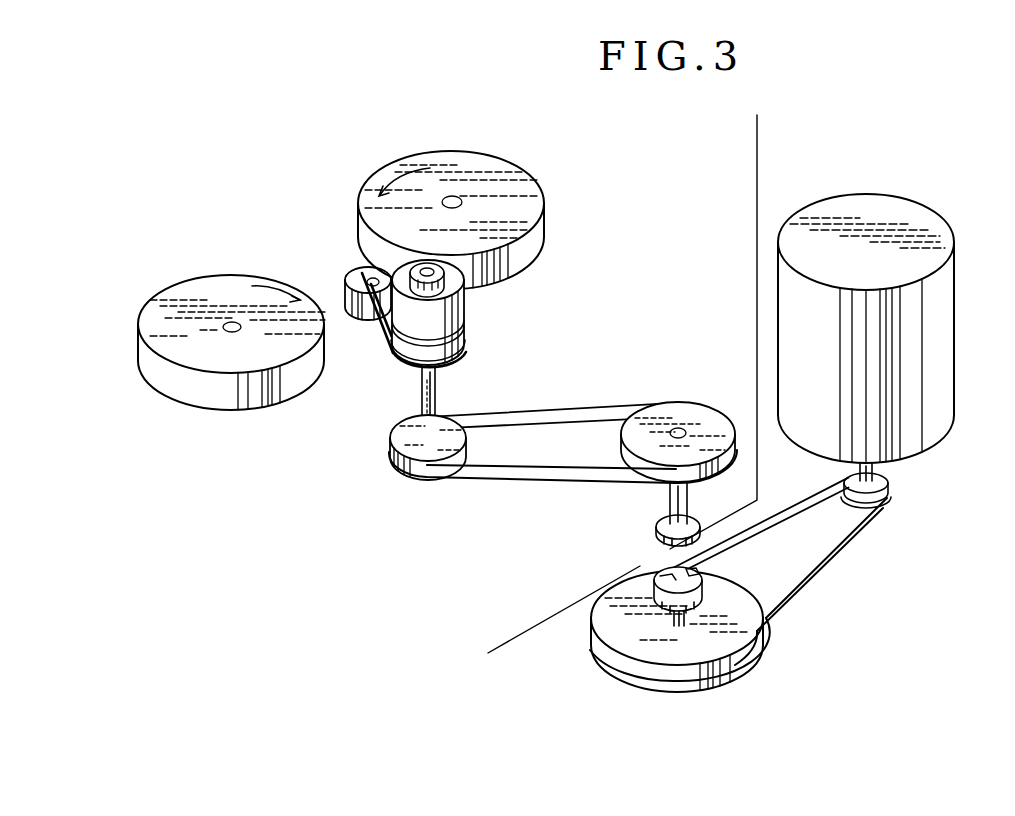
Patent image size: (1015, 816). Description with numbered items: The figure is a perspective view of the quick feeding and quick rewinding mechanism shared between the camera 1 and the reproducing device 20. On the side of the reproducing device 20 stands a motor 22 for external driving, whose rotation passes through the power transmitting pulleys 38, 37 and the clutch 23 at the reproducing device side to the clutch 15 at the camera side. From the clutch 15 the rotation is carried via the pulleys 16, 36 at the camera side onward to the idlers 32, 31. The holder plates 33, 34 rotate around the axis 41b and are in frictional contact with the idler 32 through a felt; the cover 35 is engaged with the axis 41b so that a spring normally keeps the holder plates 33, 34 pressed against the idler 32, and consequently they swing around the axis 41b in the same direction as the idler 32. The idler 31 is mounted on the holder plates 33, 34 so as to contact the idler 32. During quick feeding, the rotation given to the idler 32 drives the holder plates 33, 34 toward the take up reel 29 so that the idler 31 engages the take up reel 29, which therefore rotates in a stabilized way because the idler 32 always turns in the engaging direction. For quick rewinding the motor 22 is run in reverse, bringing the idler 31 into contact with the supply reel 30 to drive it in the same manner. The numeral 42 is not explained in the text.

The camera 1 is at (729, 176).
The reproducing device 20 is at (813, 176).
The motor 22 is at (942, 320).
The power transmitting pulley 38 is at (890, 482).
The power transmitting pulley 37 is at (650, 660).
The clutch 23 is at (652, 590).
The capstan shaft 42 is at (697, 608).
The clutch 15 is at (656, 534).
The pulley 16 is at (665, 406).
The pulley 36 is at (414, 455).
The axis 41b is at (437, 396).
The cover 35 is at (468, 305).
The holder plate 33 is at (467, 329).
The holder plate 34 is at (468, 352).
The idler 32 is at (408, 342).
The idler 31 is at (345, 275).
The take up reel 29 is at (464, 150).
The supply reel 30 is at (227, 284).